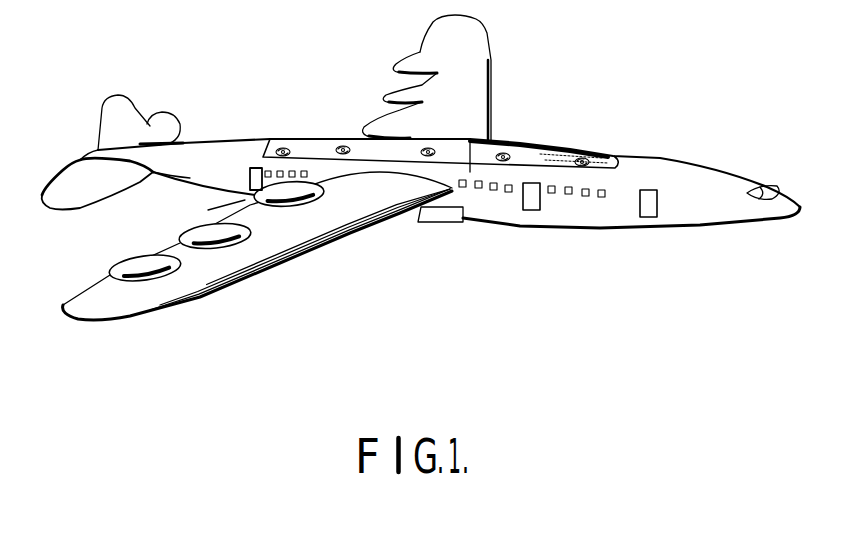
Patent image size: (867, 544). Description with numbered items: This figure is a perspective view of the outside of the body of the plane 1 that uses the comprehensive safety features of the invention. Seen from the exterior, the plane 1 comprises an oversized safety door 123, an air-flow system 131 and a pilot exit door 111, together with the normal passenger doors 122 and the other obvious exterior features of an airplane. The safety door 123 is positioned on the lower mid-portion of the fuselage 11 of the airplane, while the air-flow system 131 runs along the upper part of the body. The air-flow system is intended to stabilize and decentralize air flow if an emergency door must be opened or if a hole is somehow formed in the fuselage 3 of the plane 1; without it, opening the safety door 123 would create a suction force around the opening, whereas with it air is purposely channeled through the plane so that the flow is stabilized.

The plane 1 is at (660, 157).
The fuselage 11 is at (670, 178).
The pilot exit door 111 is at (653, 215).
The passenger doors 122 is at (252, 183).
The safety door 123 is at (447, 218).
The air-flow system 131 is at (588, 152).
The fuselage 3 is at (488, 126).